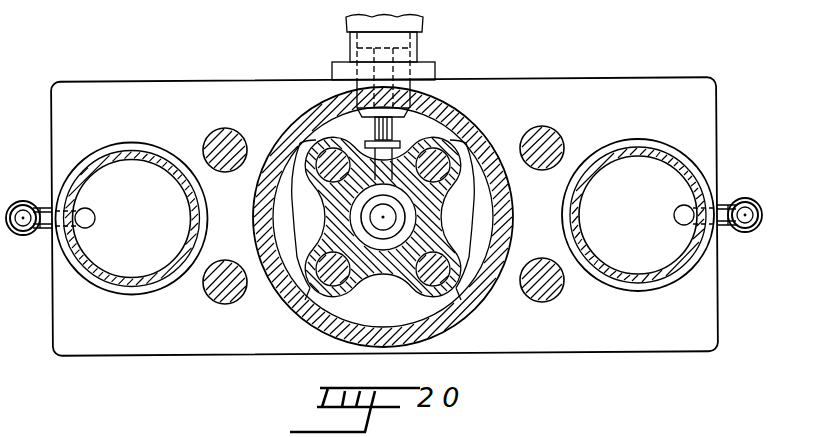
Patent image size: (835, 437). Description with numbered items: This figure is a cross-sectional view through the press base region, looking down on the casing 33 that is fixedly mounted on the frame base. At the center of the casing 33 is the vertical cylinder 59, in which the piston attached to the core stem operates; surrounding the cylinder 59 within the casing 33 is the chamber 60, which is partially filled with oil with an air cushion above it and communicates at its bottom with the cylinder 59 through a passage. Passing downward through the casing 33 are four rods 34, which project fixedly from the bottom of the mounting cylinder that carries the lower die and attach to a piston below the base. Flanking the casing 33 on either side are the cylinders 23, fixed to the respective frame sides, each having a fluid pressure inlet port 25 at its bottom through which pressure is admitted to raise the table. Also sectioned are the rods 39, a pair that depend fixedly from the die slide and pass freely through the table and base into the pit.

The cylinder 23 is at (122, 231).
The fluid pressure inlet port 25 is at (85, 209).
The casing 33 is at (464, 127).
The rods 34 is at (314, 176).
The rods 39 is at (218, 133).
The vertical cylinder 59 is at (385, 243).
The chamber 60 is at (350, 324).